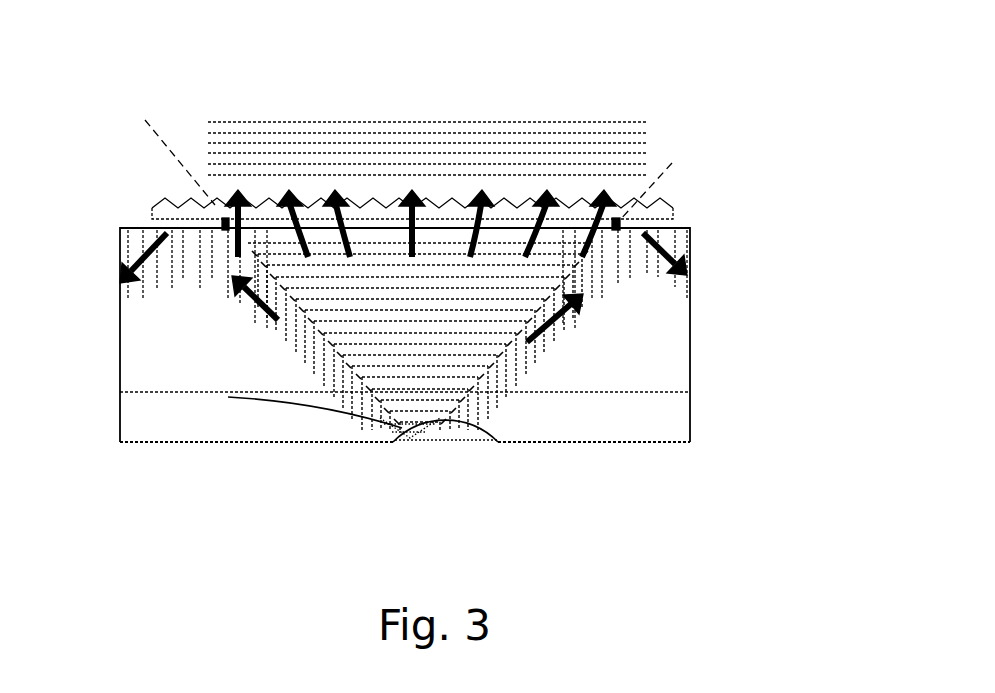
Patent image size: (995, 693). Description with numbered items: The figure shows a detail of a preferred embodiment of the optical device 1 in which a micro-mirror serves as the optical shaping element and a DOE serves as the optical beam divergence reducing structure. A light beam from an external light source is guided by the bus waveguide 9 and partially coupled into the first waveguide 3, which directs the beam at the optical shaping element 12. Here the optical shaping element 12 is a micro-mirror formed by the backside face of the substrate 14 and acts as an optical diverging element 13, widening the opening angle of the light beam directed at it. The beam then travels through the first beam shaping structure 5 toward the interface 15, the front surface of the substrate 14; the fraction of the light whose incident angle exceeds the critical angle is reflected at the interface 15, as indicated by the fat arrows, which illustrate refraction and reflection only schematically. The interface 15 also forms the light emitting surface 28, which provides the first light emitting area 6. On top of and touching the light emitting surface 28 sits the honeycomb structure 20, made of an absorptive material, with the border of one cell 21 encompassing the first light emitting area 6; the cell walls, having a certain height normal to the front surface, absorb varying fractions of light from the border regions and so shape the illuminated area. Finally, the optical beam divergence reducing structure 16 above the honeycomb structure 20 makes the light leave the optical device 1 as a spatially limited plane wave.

The optical device 1 is at (698, 120).
The first waveguide 3 is at (315, 410).
The first beam shaping structure 5 is at (479, 462).
The first light emitting area 6 is at (443, 212).
The bus waveguide 9 is at (160, 395).
The optical shaping element 12 is at (440, 421).
The optical diverging element 13 is at (412, 436).
The substrate 14 is at (605, 410).
The interface 15 is at (132, 228).
The optical beam divergence reducing structure 16 is at (263, 210).
The honeycomb structure 20 is at (617, 218).
The cell 21 is at (224, 218).
The light emitting surface 28 is at (684, 215).